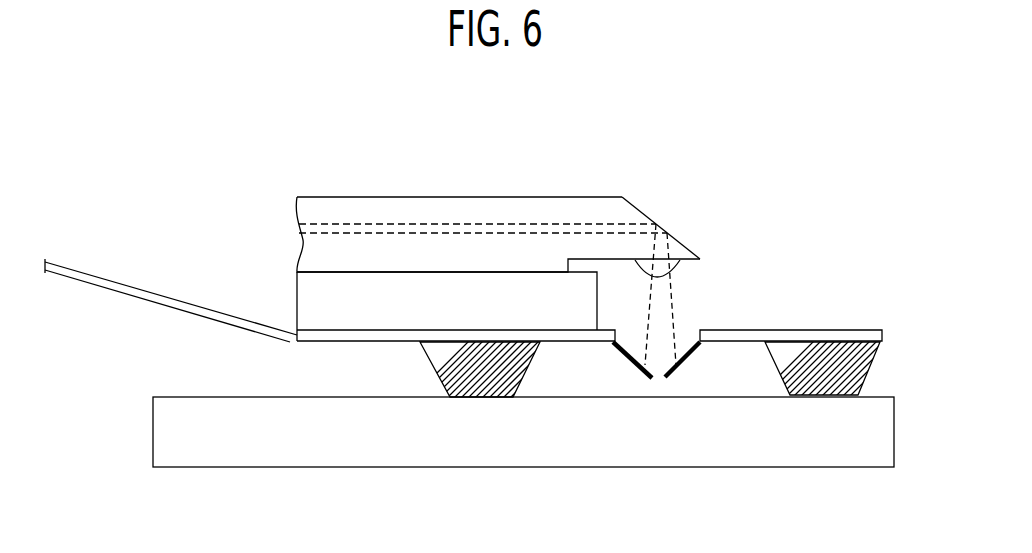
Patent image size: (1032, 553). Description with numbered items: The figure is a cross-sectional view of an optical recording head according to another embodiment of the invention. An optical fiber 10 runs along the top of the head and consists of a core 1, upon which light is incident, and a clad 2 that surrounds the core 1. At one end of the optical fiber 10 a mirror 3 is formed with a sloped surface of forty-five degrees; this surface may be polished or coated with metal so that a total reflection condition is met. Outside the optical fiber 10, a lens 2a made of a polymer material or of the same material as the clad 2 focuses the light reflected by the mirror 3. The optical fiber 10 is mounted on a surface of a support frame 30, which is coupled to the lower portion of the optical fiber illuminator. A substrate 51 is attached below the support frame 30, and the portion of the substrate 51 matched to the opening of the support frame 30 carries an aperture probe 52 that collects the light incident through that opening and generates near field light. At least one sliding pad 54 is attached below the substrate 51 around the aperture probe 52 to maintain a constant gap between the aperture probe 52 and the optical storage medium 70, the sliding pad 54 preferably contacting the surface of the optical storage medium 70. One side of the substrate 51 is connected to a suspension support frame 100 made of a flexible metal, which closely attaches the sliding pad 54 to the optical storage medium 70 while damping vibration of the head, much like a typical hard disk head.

The optical fiber 10 is at (413, 141).
The core 1 is at (348, 224).
The clad 2 is at (392, 207).
The lens 2a is at (683, 266).
The mirror 3 is at (655, 203).
The support frame 30 is at (305, 300).
The substrate 51 is at (872, 330).
The aperture probe 52 is at (630, 360).
The sliding pad 54 is at (872, 367).
The optical storage medium 70 is at (545, 467).
The suspension support frame 100 is at (92, 277).